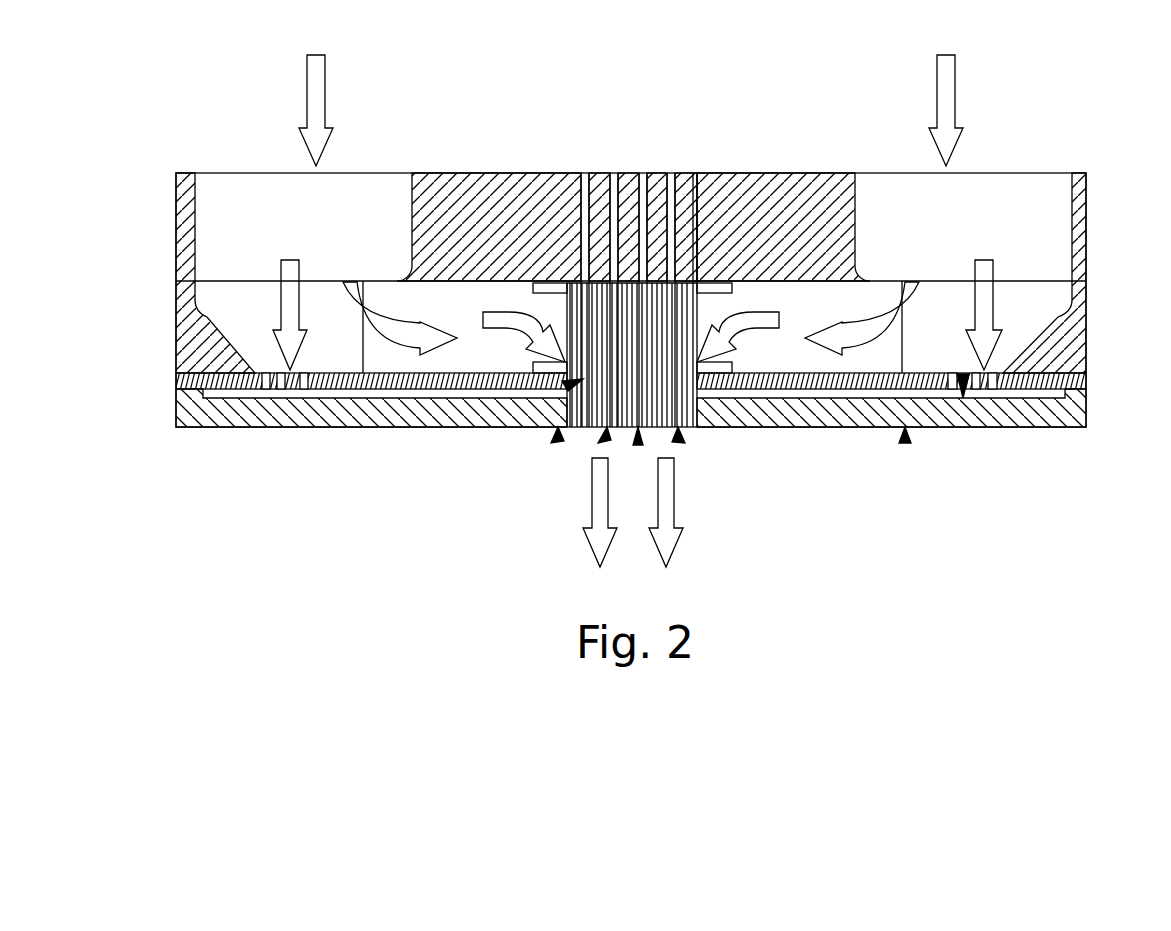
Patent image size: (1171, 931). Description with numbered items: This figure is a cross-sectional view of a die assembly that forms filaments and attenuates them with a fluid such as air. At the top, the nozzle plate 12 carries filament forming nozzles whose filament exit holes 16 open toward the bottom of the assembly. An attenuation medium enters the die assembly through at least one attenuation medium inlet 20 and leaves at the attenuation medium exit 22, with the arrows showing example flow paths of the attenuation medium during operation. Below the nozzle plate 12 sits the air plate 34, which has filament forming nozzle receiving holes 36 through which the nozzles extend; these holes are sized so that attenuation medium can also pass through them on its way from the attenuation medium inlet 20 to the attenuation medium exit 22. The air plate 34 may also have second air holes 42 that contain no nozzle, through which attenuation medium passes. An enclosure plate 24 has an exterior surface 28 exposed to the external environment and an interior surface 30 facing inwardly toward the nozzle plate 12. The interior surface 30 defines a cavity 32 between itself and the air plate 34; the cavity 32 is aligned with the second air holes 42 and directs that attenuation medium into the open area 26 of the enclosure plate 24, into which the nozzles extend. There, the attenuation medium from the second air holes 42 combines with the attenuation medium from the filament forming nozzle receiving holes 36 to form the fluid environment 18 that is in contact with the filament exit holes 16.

The nozzle plate 12 is at (1087, 229).
The filament exit holes 16 is at (604, 438).
The fluid environment 18 is at (556, 440).
The attenuation medium inlet 20 is at (315, 93).
The attenuation medium exit 22 is at (638, 445).
The enclosure plate 24 is at (1085, 413).
The open area 26 is at (703, 428).
The exterior surface 28 is at (906, 443).
The interior surface 30 is at (962, 373).
The cavity 32 is at (337, 392).
The air plate 34 is at (1078, 381).
The filament forming nozzle receiving holes 36 is at (563, 386).
The second air holes 42 is at (265, 392).